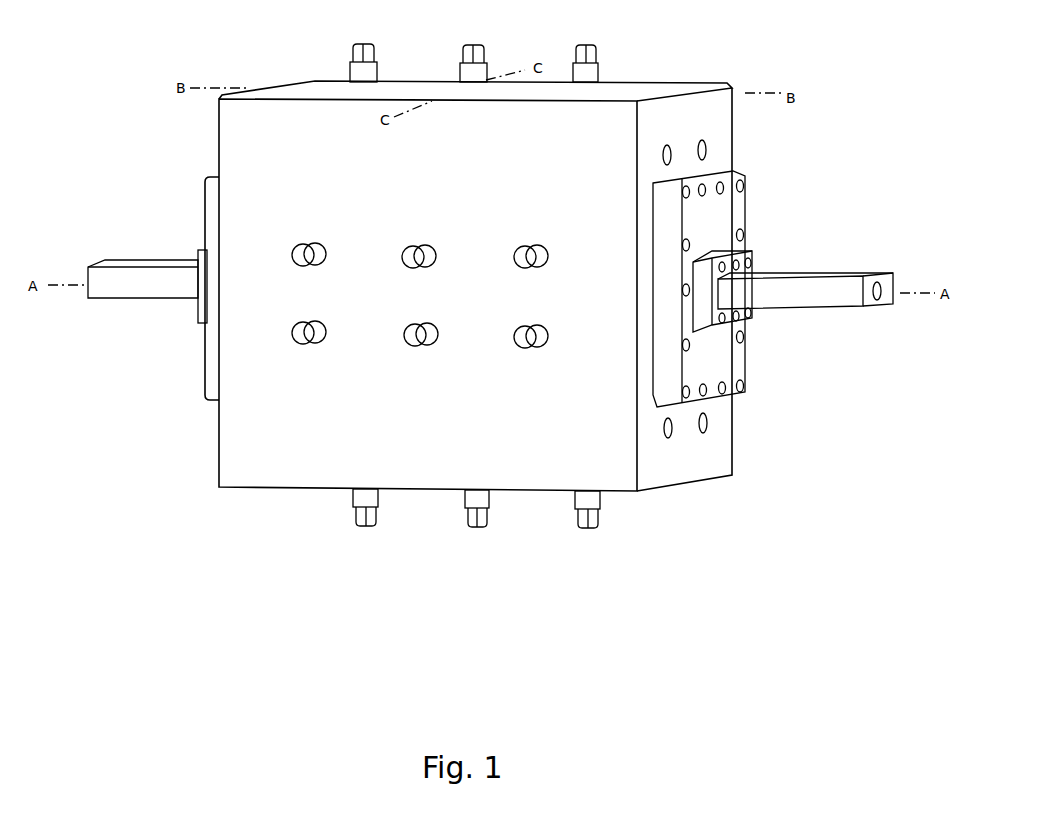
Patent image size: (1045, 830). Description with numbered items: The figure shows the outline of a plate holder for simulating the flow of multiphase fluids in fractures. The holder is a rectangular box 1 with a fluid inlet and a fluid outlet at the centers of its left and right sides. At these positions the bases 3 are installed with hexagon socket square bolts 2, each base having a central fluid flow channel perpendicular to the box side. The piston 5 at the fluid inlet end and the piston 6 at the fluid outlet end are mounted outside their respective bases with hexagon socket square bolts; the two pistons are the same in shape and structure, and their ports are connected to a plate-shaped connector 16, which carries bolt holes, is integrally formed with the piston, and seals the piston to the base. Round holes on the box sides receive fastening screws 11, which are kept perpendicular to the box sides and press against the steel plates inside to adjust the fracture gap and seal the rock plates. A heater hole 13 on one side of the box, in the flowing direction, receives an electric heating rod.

The rectangular box 1 is at (257, 90).
The hexagon socket square bolts 2 is at (721, 266).
The bases 3 is at (737, 211).
The piston at the fluid inlet end 5 is at (163, 262).
The piston at the fluid outlet end 6 is at (800, 287).
The fastening screws 11 is at (589, 52).
The heater hole 13 is at (706, 143).
The plate-shaped connector 16 is at (750, 252).